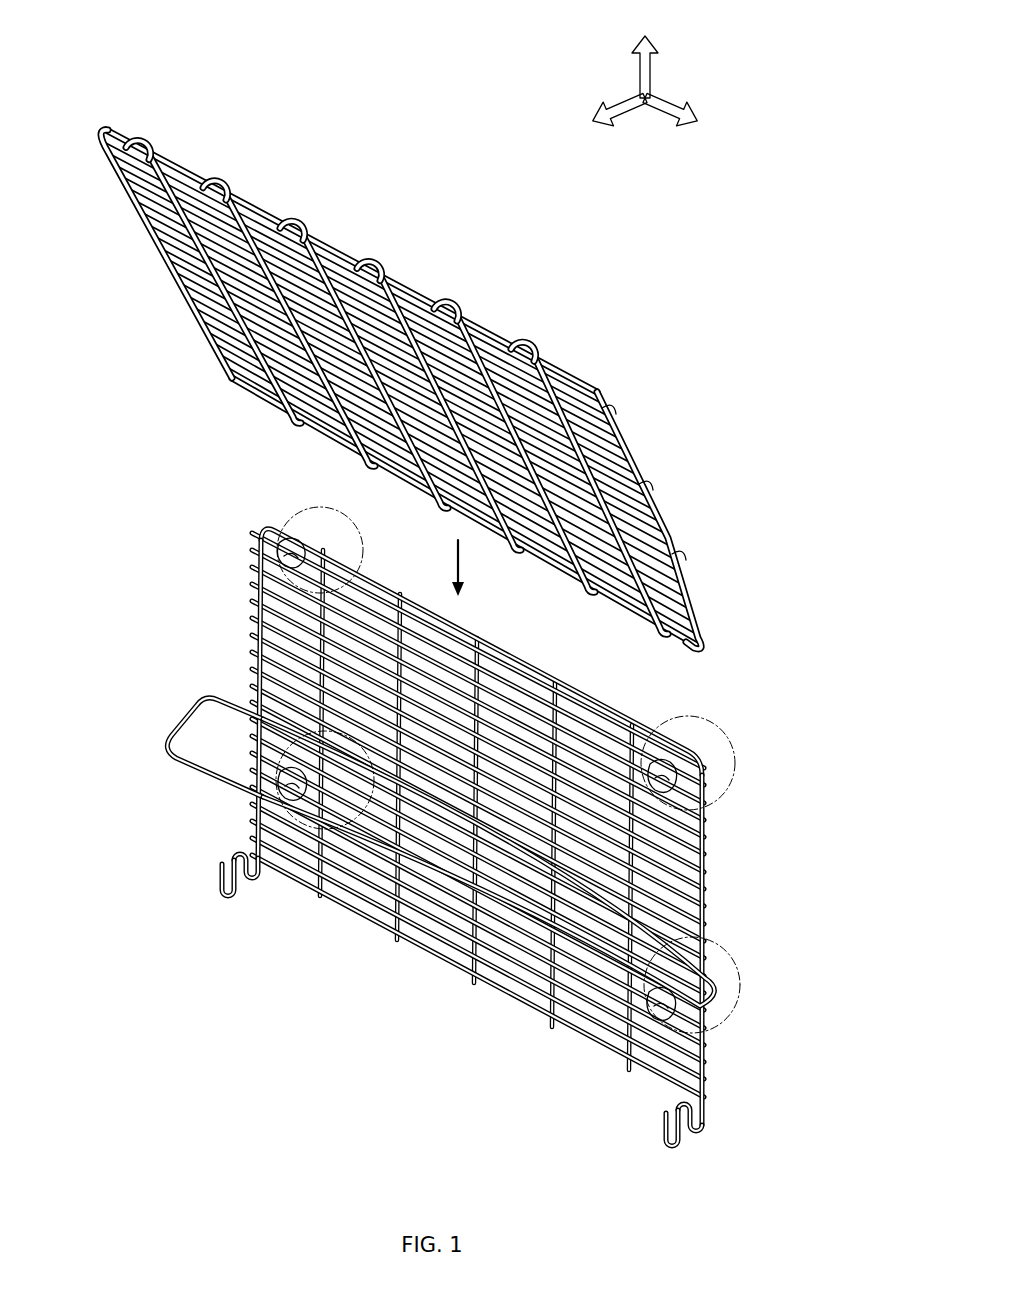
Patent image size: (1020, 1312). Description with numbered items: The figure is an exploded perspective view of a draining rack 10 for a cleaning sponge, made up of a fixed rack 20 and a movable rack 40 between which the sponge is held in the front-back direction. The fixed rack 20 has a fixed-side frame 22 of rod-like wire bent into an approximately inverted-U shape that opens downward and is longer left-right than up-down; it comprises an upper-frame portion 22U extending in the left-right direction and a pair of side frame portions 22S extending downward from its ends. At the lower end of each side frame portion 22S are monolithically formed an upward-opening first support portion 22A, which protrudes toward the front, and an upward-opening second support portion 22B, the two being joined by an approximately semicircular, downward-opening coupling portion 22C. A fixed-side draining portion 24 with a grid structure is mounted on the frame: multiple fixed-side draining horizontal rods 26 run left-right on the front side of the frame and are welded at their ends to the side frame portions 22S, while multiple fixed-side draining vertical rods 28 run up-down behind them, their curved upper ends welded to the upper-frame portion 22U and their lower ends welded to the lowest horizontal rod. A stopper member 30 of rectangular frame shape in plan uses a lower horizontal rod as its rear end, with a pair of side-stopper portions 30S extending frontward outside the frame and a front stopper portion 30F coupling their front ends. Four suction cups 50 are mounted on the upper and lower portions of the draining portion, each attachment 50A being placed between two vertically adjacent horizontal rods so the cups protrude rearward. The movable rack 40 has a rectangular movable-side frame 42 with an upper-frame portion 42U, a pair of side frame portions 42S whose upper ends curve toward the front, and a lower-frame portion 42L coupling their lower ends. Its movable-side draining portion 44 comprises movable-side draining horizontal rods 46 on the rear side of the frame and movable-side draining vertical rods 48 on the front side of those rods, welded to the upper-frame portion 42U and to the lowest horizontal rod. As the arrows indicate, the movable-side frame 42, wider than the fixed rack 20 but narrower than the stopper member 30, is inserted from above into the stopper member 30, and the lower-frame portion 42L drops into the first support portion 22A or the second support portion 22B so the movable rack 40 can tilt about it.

The draining rack 10 is at (438, 141).
The fixed rack 20 is at (458, 826).
The fixed-side frame 22 is at (477, 826).
The upper-frame portion 22U is at (512, 656).
The side frame portions 22S is at (252, 610).
The coupling portion 22C is at (462, 1009).
The first support portion 22A is at (262, 880).
The second support portion 22B is at (231, 897).
The fixed-side draining portion 24 is at (513, 815).
The fixed-side draining horizontal rods 26 is at (704, 854).
The fixed-side draining vertical rods 28 is at (398, 915).
The stopper member 30 is at (450, 847).
The side-stopper portions 30S is at (180, 731).
The front stopper portion 30F is at (184, 765).
The movable rack 40 is at (419, 366).
The movable-side frame 42 is at (419, 366).
The upper-frame portion 42U is at (378, 277).
The lower-frame portion 42L is at (404, 478).
The side frame portions 42S is at (160, 260).
The movable-side draining portion 44 is at (494, 316).
The movable-side draining horizontal rods 46 is at (612, 424).
The movable-side draining vertical rods 48 is at (285, 424).
The suction cups 50 is at (352, 548).
The attachment 50A is at (289, 538).